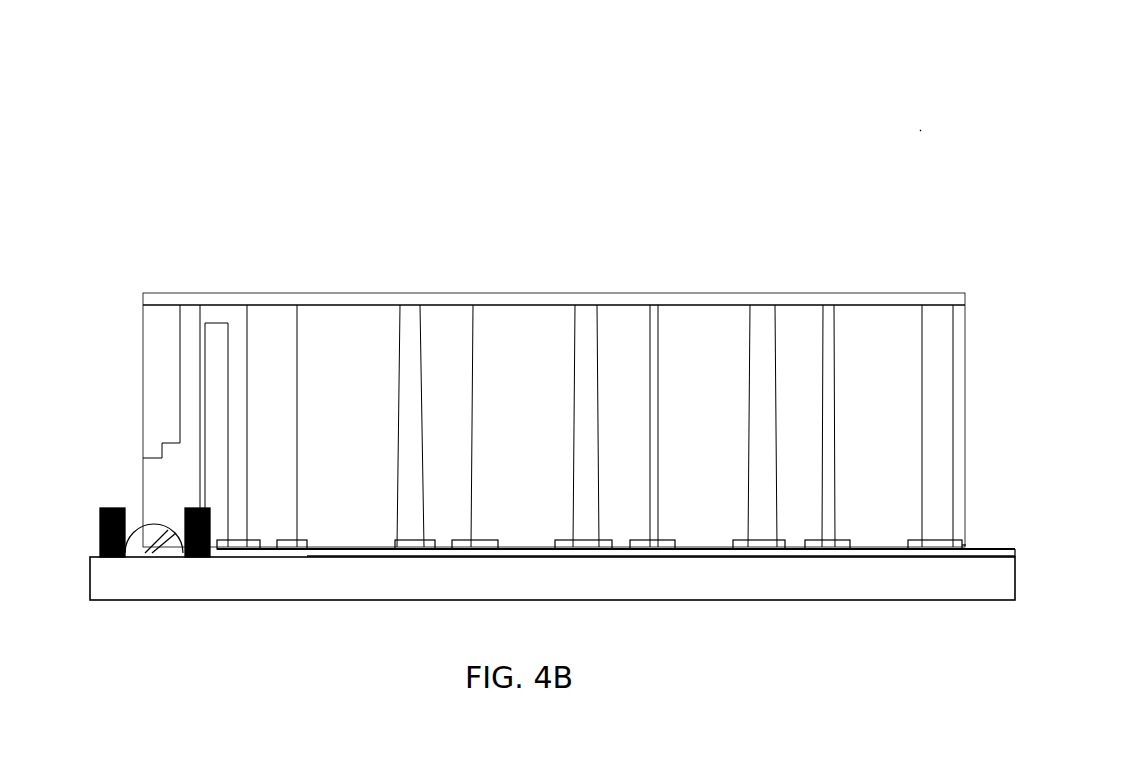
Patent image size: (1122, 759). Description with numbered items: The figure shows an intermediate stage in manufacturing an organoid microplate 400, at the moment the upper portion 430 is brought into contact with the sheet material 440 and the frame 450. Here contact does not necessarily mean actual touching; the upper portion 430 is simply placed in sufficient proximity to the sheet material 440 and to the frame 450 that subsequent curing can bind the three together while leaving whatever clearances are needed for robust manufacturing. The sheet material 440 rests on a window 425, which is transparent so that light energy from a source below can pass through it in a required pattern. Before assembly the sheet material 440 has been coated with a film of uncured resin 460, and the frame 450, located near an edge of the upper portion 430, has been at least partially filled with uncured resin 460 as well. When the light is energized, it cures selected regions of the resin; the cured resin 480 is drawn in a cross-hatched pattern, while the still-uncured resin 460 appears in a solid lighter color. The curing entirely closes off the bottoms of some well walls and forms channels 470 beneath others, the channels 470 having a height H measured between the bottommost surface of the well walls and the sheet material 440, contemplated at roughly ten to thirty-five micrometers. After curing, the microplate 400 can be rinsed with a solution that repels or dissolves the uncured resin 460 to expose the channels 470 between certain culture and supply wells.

The organoid microplate 400 is at (925, 127).
The upper portion 430 is at (403, 292).
The channels 470 is at (655, 380).
The window 425 is at (820, 575).
The sheet material 440 is at (623, 558).
The uncured resin 460 is at (377, 550).
The frame 450 is at (115, 562).
The cured resin 480 is at (147, 510).
The height H is at (967, 542).